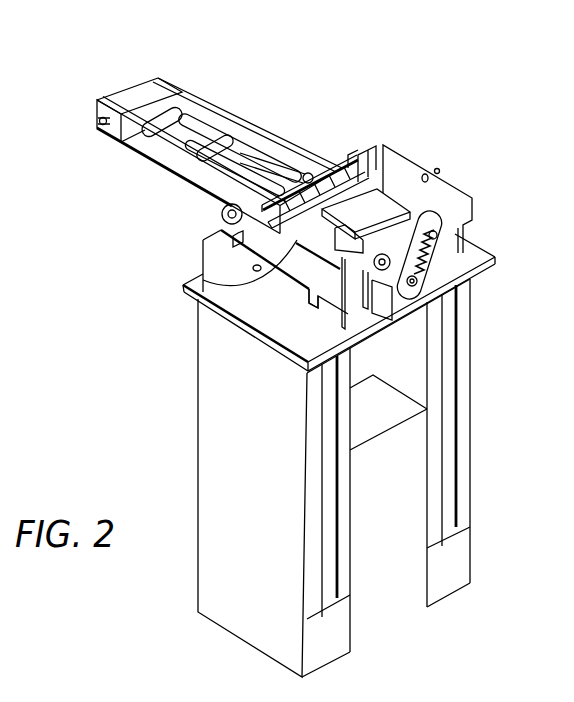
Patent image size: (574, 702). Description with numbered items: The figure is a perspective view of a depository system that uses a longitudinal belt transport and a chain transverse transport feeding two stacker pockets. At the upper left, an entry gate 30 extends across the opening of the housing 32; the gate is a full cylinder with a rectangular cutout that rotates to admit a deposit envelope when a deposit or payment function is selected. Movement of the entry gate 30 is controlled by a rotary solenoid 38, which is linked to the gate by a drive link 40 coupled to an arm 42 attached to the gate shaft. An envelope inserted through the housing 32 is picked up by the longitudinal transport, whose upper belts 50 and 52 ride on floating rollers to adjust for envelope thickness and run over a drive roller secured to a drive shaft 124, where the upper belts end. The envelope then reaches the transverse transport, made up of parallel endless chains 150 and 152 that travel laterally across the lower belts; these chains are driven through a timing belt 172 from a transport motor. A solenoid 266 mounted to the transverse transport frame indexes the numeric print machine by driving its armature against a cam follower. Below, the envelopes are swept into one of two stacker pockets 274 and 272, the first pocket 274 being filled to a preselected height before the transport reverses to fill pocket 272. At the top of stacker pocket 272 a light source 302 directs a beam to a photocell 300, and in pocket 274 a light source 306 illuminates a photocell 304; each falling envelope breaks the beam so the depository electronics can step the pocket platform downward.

The entry gate 30 is at (197, 141).
The housing 32 is at (96, 101).
The arm 42 is at (98, 121).
The upper belt 50 is at (160, 134).
The upper belt 52 is at (197, 120).
The drive link 40 is at (186, 183).
The rotary solenoid 38 is at (222, 217).
The drive shaft 124 is at (310, 172).
The endless chain 150 is at (342, 170).
The photocell 300 is at (294, 229).
The light source 302 is at (440, 170).
The timing belt 172 is at (426, 250).
The solenoid 266 is at (417, 287).
The light source 306 is at (253, 268).
The photocell 304 is at (200, 296).
The endless chain 152 is at (315, 258).
The stacker pocket 274 is at (200, 385).
The stacker pocket 272 is at (471, 391).